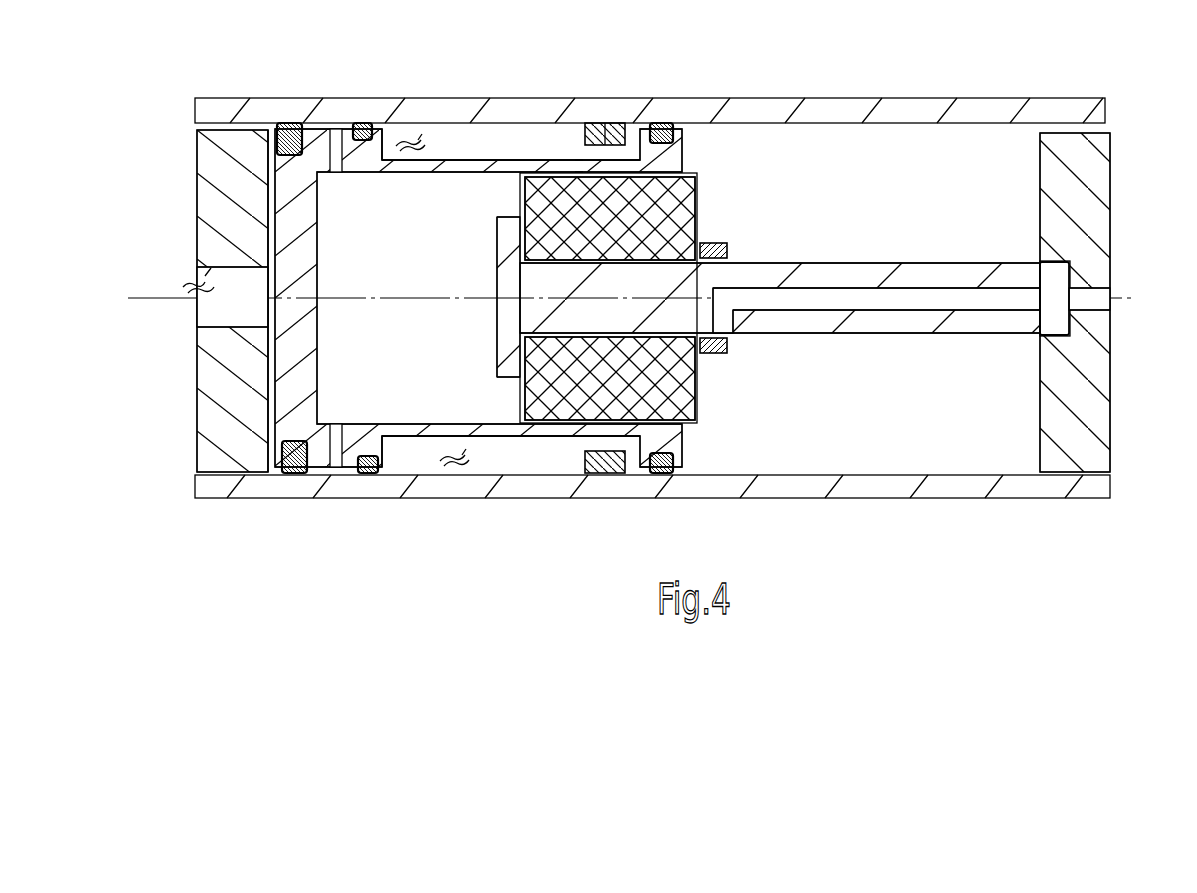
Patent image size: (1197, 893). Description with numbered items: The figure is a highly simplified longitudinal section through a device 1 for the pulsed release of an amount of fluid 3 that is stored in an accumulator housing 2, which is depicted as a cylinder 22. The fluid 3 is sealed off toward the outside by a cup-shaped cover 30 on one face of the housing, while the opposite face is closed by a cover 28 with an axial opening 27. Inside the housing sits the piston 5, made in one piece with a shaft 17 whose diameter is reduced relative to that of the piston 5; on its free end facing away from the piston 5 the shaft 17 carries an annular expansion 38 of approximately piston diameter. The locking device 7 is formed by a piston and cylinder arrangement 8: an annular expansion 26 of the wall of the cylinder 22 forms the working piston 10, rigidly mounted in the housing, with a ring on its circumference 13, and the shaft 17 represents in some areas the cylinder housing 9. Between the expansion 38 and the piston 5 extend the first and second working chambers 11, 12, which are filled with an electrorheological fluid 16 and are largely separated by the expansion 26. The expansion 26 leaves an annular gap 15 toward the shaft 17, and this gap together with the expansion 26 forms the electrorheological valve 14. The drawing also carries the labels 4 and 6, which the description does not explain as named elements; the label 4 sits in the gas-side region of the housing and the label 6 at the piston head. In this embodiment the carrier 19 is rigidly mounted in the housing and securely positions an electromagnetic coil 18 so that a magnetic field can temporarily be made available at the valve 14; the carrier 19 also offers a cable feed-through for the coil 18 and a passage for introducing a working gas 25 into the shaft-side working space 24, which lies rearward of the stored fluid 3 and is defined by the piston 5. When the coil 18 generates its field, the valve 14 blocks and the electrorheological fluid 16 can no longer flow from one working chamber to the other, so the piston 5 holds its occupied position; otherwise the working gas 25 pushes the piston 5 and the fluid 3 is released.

The device 1 is at (834, 70).
The accumulator housing 2 is at (694, 94).
The amount of fluid 3 is at (190, 280).
The working chamber 4 is at (868, 208).
The piston 5 is at (295, 206).
The piston head seal body 6 is at (705, 200).
The locking device 7 is at (652, 80).
The piston and cylinder arrangement 8 is at (488, 182).
The cylinder housing 9 is at (421, 172).
The working piston 10 is at (568, 134).
The first working chamber 11 is at (633, 123).
The second working chamber 12 is at (480, 128).
The circumference 13 is at (595, 123).
The electrorheological valve 14 is at (580, 162).
The annular gap 15 is at (620, 123).
The electrorheological fluid 16 is at (420, 141).
The shaft 17 is at (352, 440).
The electromagnetic coil 18 is at (680, 398).
The carrier 19 is at (935, 320).
The cylinder 22 is at (946, 105).
The shaft-side working space 24 is at (980, 207).
The working gas 25 is at (862, 440).
The annular expansion 26 is at (586, 482).
The axial opening 27 is at (1076, 297).
The cover 28 is at (1095, 361).
The cover 30 is at (220, 388).
The annular expansion 38 is at (384, 174).